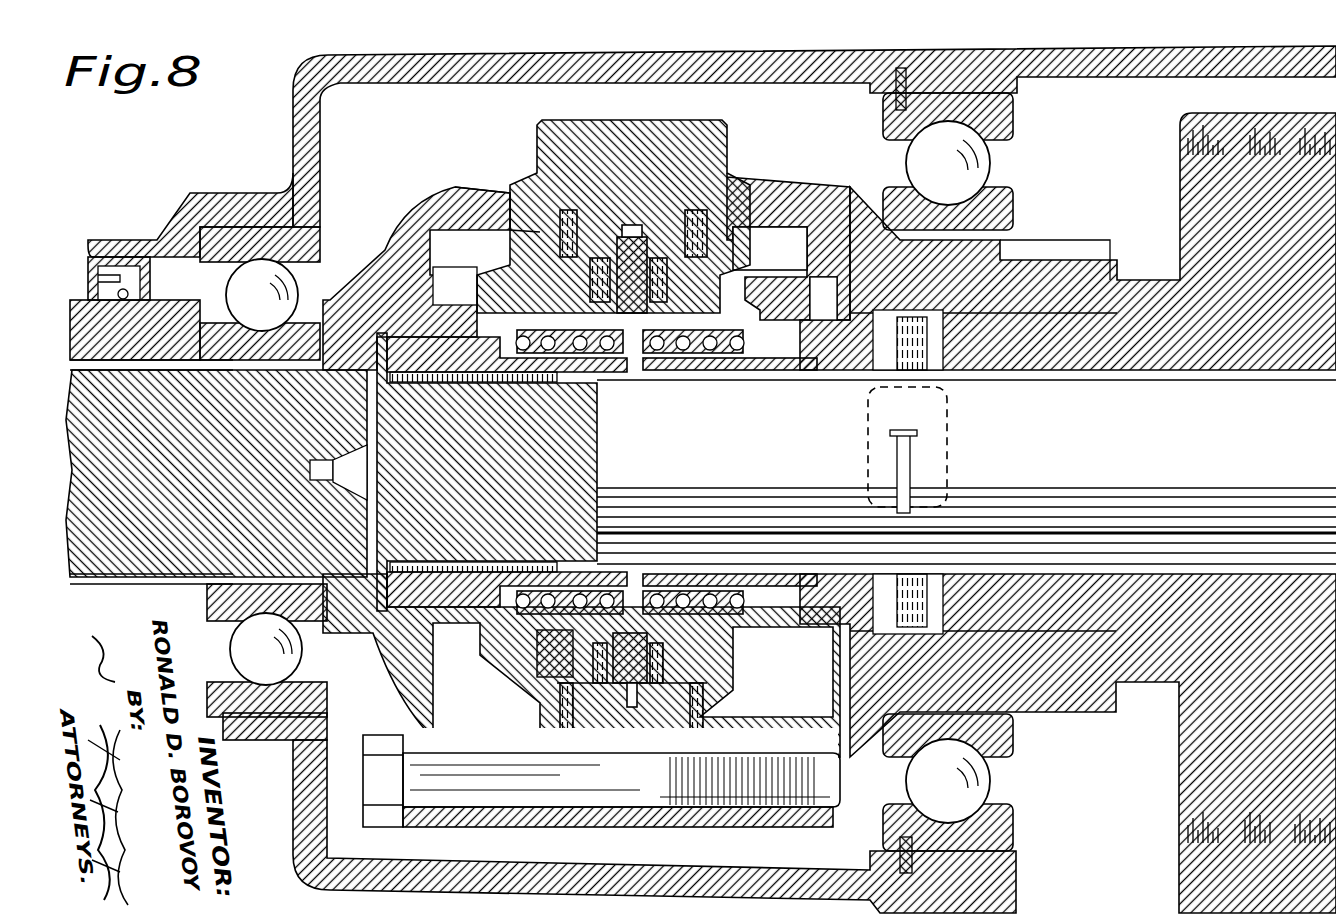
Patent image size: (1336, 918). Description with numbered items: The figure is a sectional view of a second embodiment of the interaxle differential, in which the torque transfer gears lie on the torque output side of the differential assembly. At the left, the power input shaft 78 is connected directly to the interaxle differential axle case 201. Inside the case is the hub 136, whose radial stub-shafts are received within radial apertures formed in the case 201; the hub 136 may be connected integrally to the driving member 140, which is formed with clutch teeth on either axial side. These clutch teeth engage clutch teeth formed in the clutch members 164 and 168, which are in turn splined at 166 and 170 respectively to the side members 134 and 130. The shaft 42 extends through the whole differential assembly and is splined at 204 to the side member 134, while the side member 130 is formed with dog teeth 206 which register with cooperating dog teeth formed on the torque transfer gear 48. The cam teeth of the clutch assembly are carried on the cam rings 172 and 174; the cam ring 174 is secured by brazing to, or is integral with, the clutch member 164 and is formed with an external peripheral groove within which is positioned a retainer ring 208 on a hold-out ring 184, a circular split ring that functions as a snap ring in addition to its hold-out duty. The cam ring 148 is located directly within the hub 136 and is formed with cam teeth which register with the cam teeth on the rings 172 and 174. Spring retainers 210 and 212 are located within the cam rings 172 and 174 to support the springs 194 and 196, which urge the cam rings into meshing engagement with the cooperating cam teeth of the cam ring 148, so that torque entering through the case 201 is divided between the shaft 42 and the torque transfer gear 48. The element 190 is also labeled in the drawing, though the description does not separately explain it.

The shaft 42 is at (1150, 438).
The torque transfer gear 48 is at (1189, 740).
The power input shaft 78 is at (190, 576).
The side member 130 is at (870, 360).
The side member 134 is at (450, 357).
The hub 136 is at (660, 120).
The driving member 140 is at (737, 242).
The cam ring 148 is at (656, 356).
The clutch member 164 is at (510, 230).
The spline 166 is at (487, 366).
The clutch member 168 is at (753, 180).
The spline 170 is at (766, 340).
The cam ring 172 is at (535, 600).
The cam ring 174 is at (703, 600).
The hold-out ring 184 is at (580, 250).
The spring 190 is at (672, 237).
The spring 194 is at (584, 354).
The spring 196 is at (671, 350).
The interaxle differential axle case 201 is at (432, 195).
The spline 204 is at (530, 377).
The dog teeth 206 is at (876, 388).
The retainer ring 208 is at (560, 272).
The spring retainer 210 is at (575, 330).
The spring retainer 212 is at (676, 332).